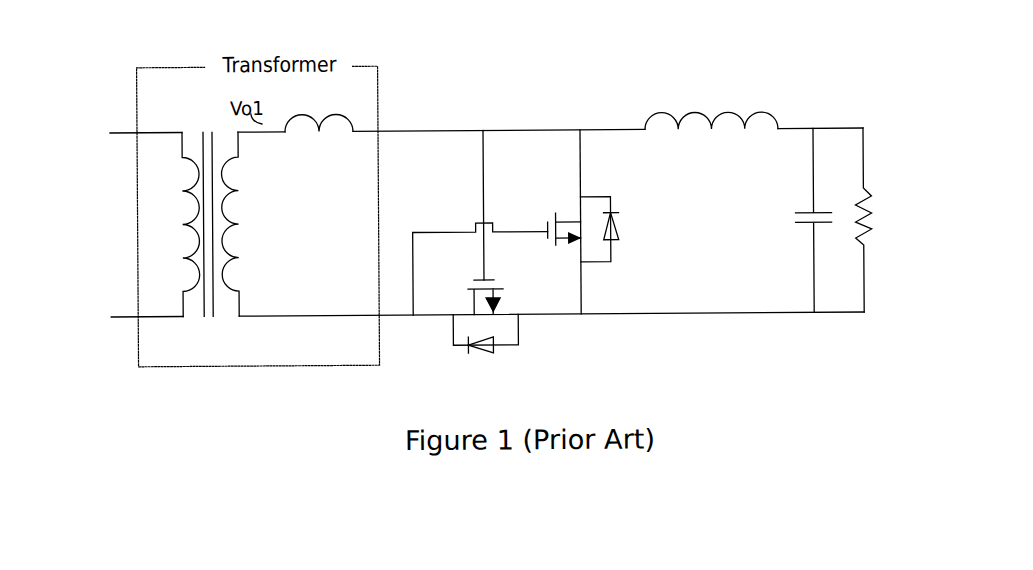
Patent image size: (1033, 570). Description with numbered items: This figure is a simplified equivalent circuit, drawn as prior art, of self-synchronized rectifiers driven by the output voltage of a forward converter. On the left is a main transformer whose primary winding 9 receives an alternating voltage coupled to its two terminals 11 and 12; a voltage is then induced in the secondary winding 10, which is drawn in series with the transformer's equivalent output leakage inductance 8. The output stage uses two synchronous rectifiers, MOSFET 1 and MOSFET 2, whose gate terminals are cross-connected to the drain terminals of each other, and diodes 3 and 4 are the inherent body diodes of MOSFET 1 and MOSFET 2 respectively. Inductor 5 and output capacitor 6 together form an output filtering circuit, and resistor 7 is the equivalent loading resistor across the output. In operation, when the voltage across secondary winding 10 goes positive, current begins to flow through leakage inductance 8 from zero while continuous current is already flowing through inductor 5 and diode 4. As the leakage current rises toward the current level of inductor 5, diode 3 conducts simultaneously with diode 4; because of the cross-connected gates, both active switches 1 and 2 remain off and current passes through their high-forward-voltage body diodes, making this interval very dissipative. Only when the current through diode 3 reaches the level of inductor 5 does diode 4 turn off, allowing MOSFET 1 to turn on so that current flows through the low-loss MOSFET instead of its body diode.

The MOSFET 1 is at (505, 301).
The MOSFET 2 is at (572, 215).
The diode 3 is at (505, 356).
The diode 4 is at (627, 218).
The inductor 5 is at (699, 114).
The output capacitor 6 is at (803, 232).
The resistor 7 is at (870, 248).
The output leakage inductance 8 is at (305, 135).
The primary winding 9 is at (181, 200).
The secondary winding 10 is at (238, 201).
The terminal 11 is at (103, 135).
The terminal 12 is at (103, 317).